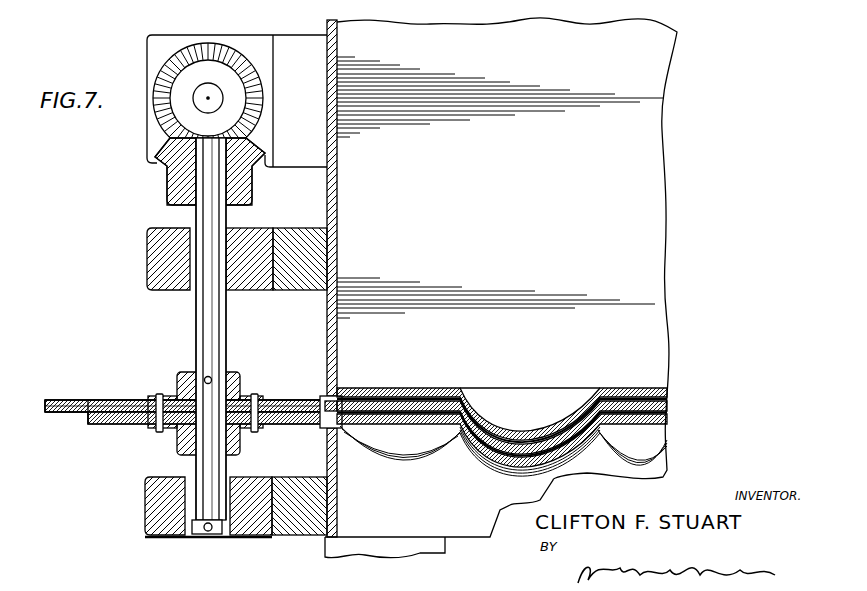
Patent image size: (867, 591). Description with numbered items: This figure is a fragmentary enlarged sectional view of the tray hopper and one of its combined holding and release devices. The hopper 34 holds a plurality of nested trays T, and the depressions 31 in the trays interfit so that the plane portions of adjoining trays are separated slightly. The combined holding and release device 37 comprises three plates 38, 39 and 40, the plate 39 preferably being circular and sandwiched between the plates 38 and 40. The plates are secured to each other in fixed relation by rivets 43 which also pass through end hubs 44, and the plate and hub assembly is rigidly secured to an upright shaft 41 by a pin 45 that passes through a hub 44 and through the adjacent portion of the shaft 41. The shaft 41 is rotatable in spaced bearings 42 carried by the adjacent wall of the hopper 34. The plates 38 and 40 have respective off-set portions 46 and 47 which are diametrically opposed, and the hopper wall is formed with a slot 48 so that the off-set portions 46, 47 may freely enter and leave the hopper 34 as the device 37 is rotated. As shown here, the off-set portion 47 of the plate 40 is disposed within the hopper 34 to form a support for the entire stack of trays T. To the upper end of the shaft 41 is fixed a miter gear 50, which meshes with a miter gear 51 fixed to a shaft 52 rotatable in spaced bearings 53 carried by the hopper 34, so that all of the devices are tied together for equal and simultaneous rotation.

The depressions 31 is at (547, 402).
The hopper 34 is at (667, 133).
The combined holding and release device 37 is at (87, 399).
The plate 38 is at (107, 398).
The plate 39 is at (88, 410).
The plate 40 is at (98, 424).
The upright shaft 41 is at (213, 333).
The bearings 42 is at (158, 262).
The rivets 43 is at (141, 424).
The end hubs 44 is at (242, 379).
The pin 45 is at (211, 378).
The off-set portion 46 is at (48, 400).
The off-set portion 47 is at (351, 427).
The slot 48 is at (325, 428).
The miter gear 50 is at (168, 180).
The miter gear 51 is at (215, 70).
The shaft 52 is at (217, 96).
The bearings 53 is at (322, 116).
The tray T is at (448, 422).